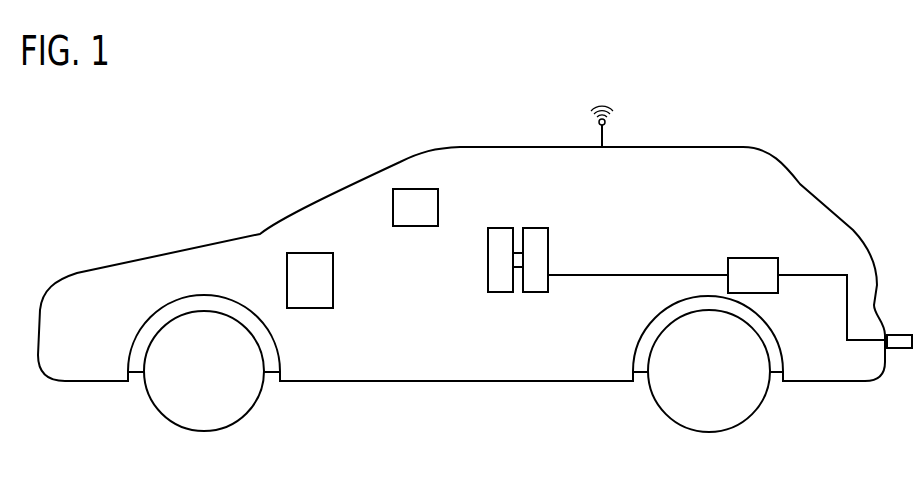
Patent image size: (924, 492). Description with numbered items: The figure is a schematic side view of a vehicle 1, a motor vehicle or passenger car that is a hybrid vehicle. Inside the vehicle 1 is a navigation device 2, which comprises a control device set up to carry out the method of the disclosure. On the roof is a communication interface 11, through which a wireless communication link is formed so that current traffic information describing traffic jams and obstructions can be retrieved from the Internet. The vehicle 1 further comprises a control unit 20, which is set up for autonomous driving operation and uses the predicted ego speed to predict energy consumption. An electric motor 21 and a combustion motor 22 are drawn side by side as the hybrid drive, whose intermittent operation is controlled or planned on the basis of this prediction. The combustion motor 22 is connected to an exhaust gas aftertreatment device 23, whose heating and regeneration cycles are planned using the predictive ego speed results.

The vehicle 1 is at (782, 117).
The navigation device 2 is at (438, 207).
The communication interface 11 is at (607, 128).
The control unit 20 is at (333, 282).
The electric motor 21 is at (500, 292).
The combustion motor 22 is at (533, 292).
The exhaust gas aftertreatment device 23 is at (752, 257).